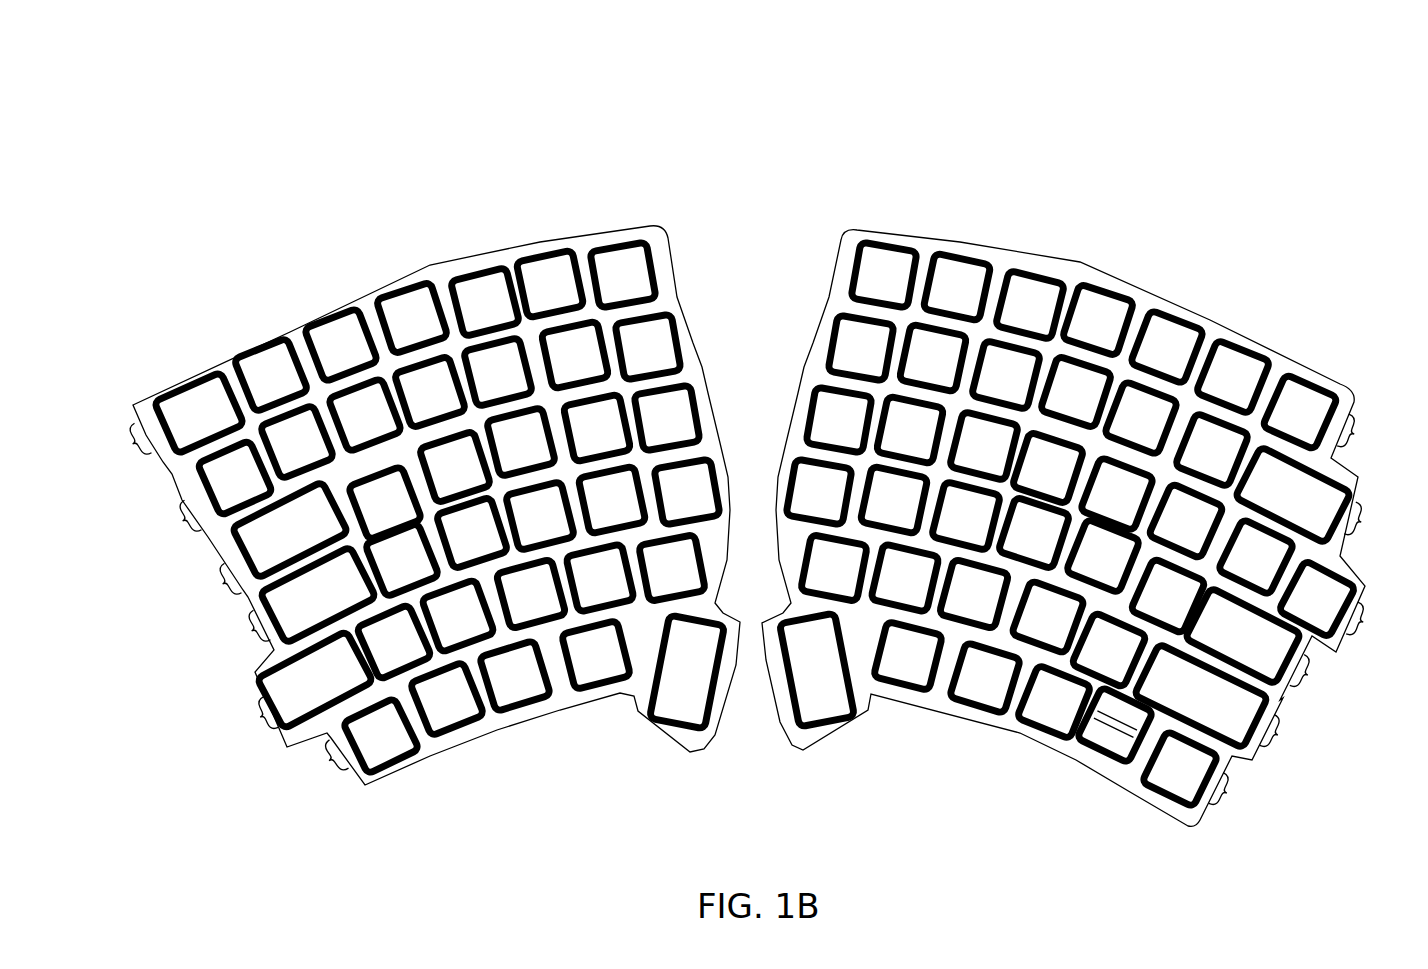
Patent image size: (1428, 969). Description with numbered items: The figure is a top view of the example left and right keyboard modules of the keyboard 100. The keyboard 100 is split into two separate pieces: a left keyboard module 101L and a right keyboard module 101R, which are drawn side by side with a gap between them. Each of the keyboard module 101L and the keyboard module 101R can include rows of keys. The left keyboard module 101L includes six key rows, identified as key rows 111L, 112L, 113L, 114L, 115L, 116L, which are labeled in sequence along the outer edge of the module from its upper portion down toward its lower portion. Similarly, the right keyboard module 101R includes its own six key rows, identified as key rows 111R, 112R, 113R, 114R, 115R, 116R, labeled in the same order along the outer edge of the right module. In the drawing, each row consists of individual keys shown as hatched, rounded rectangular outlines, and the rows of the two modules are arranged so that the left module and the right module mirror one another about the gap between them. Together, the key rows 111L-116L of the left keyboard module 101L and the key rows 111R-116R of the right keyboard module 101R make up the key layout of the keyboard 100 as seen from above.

The keyboard 100 is at (1071, 31).
The keyboard module 101L is at (543, 237).
The keyboard module 101R is at (1043, 255).
The key row 111L is at (120, 440).
The key row 112L is at (165, 517).
The key row 113L is at (204, 580).
The key row 114L is at (237, 627).
The key row 115L is at (244, 718).
The key row 116L is at (318, 760).
The key row 111R is at (1370, 432).
The key row 112R is at (1376, 523).
The key row 113R is at (1380, 622).
The key row 114R is at (1328, 678).
The key row 115R is at (1291, 737).
The key row 116R is at (1243, 795).